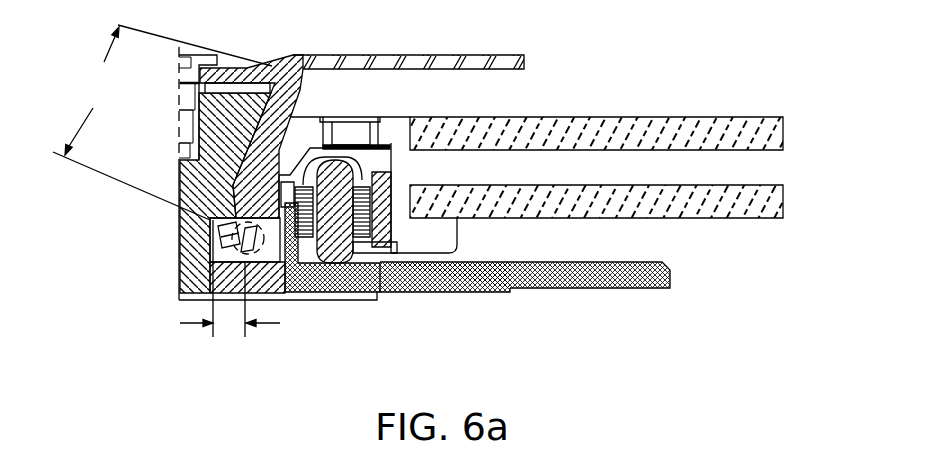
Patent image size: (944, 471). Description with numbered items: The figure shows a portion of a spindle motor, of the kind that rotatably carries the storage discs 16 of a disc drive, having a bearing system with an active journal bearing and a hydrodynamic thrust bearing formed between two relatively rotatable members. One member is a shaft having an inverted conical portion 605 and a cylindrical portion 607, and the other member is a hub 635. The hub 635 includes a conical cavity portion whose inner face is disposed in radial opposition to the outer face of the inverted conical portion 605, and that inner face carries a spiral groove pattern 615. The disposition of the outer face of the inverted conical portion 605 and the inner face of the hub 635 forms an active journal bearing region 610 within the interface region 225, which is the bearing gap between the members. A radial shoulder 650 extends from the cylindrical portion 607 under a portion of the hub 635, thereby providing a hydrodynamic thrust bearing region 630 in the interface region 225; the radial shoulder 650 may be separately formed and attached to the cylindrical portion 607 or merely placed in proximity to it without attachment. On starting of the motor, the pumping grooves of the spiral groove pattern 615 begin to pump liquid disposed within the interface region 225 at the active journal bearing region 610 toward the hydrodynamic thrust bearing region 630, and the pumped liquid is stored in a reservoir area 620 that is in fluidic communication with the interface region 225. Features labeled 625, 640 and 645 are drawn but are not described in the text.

The storage discs 16 is at (783, 133).
The interface region 225 is at (258, 150).
The inverted conical portion 605 is at (200, 185).
The cylindrical portion 607 is at (218, 238).
The active journal bearing region 610 is at (162, 122).
The spiral groove pattern 615 is at (308, 88).
The reservoir area 620 is at (305, 235).
The latch member 625 is at (243, 252).
The hydrodynamic thrust bearing region 630 is at (256, 280).
The hub 635 is at (438, 247).
The base plate 640 is at (383, 225).
The L-shaped core 645 is at (345, 270).
The radial shoulder 650 is at (230, 248).